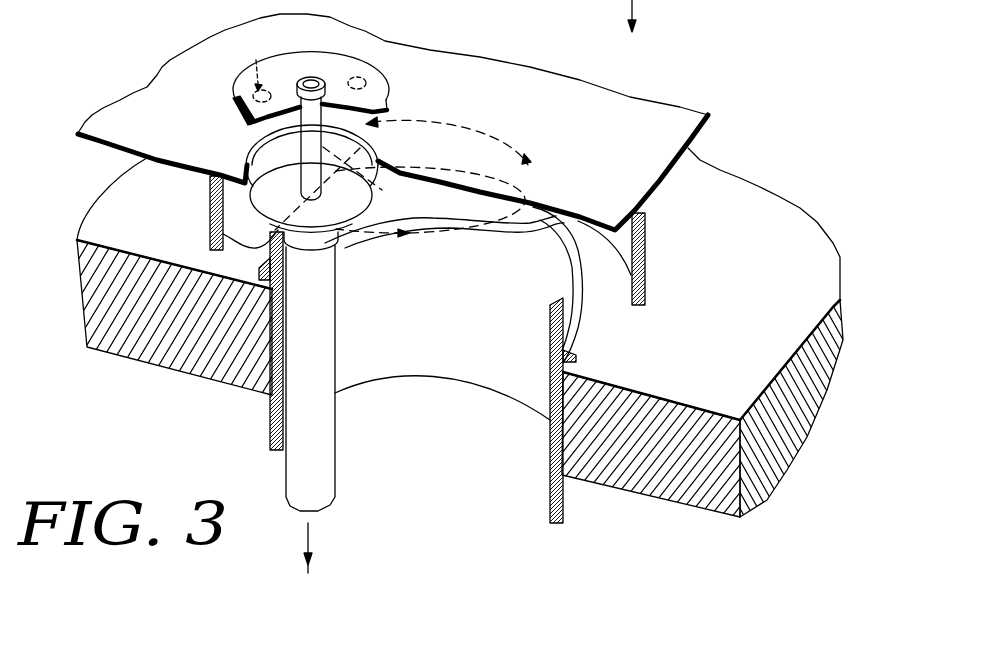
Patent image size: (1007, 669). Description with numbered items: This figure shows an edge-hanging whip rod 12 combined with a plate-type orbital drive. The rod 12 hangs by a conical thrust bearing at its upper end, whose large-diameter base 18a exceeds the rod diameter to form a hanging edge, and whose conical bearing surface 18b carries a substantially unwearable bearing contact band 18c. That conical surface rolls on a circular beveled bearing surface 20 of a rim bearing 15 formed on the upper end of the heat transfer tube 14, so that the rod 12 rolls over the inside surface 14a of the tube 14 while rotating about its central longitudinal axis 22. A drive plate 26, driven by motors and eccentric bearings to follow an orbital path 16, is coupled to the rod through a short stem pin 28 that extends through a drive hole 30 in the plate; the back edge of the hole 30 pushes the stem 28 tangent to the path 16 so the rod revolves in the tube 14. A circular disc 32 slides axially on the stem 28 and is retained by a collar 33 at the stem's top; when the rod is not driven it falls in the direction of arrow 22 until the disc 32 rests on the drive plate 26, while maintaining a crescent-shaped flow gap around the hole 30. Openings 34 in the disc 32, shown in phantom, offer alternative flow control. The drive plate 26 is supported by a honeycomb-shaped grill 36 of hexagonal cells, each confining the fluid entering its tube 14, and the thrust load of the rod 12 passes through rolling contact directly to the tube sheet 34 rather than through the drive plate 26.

The whip rod 12 is at (328, 363).
The heat transfer tube 14 is at (583, 482).
The inside surface of the tube 14a is at (514, 350).
The rim bearing 15 is at (210, 228).
The path 16 is at (530, 180).
The base of the thrust bearing 18a is at (263, 193).
The conical bearing surface 18b is at (345, 240).
The bearing contact band 18c is at (323, 250).
The beveled bearing surface 20 is at (535, 230).
The central longitudinal axis 22 is at (636, 3).
The drive plate 26 is at (567, 113).
The stem pin 28 is at (285, 145).
The drive hole 30 is at (235, 99).
The circular disc 32 is at (355, 57).
The collar 33 is at (309, 76).
The openings 34 is at (255, 58).
The honeycomb-shaped grill 36 is at (645, 242).